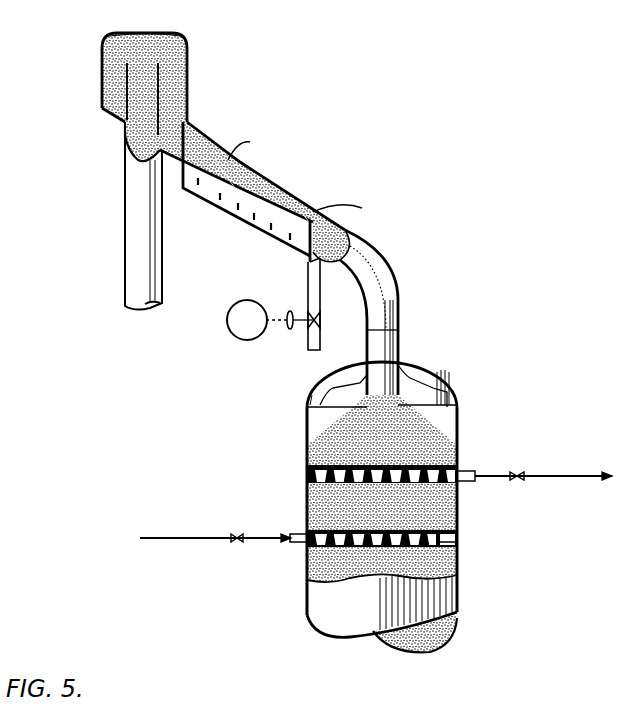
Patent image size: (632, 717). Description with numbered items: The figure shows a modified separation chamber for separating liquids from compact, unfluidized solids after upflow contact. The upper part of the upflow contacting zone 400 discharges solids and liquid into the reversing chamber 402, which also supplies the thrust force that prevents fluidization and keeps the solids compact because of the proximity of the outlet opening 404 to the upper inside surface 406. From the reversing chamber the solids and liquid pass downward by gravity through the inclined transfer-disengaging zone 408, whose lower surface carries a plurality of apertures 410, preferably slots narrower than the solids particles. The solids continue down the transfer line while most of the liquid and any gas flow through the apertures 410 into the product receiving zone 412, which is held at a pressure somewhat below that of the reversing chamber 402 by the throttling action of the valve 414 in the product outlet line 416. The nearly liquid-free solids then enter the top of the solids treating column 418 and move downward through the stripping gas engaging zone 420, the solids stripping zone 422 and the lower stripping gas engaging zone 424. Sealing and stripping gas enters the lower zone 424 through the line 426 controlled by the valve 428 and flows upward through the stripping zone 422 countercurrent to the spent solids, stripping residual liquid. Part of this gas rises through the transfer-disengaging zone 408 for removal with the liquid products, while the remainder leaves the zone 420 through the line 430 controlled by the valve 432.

The upflow contacting zone 400 is at (146, 228).
The reversing chamber 402 is at (189, 61).
The outlet opening 404 is at (138, 55).
The upper inside surface 406 is at (174, 42).
The transfer-disengaging zone 408 is at (298, 201).
The apertures 410 is at (229, 161).
The product receiving zone 412 is at (227, 212).
The valve 414 is at (305, 331).
The product outlet line 416 is at (320, 336).
The solids treating column 418 is at (459, 386).
The stripping gas engaging zone 420 is at (461, 470).
The solids stripping zone 422 is at (370, 510).
The stripping gas engaging zone 424 is at (459, 539).
The line 426 is at (197, 537).
The valve 428 is at (239, 546).
The line 430 is at (493, 480).
The valve 432 is at (556, 474).